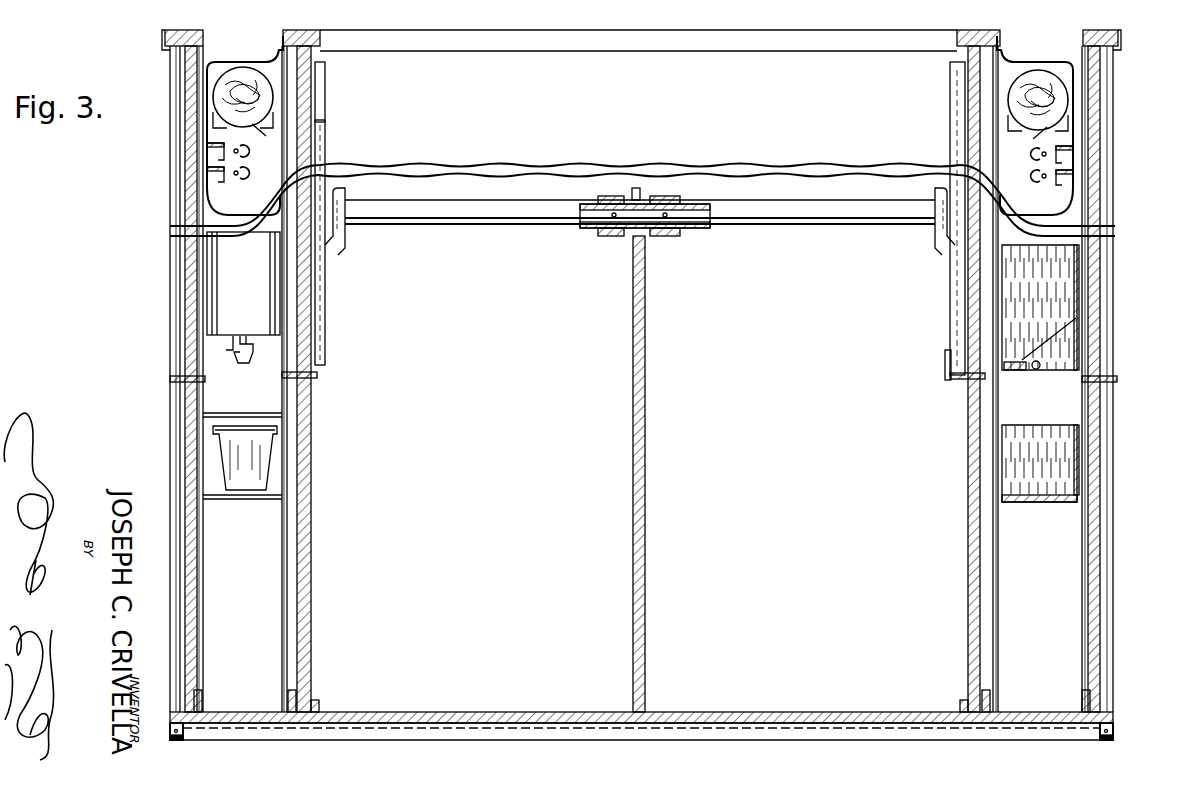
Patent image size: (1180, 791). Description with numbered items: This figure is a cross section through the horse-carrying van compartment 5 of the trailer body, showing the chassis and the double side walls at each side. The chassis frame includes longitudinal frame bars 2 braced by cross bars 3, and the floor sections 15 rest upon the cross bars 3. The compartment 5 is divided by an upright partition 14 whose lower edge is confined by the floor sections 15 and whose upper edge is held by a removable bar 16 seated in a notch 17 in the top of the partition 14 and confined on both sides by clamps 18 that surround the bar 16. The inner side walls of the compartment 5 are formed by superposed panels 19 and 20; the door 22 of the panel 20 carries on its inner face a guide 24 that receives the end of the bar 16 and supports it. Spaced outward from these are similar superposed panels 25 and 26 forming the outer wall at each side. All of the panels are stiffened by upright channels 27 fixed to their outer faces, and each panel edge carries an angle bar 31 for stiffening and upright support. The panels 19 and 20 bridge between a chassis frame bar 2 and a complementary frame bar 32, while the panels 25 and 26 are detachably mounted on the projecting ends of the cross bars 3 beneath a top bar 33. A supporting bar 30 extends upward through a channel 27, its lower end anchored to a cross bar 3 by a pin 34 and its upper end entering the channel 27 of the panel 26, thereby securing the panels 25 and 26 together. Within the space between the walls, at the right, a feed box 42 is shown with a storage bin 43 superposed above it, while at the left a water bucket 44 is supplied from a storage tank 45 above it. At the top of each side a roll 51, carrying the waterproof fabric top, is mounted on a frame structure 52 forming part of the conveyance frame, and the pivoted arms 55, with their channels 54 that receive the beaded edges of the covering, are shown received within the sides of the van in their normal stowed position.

The longitudinal frame bars 2 is at (322, 702).
The cross bars 3 is at (500, 735).
The van compartment 5 is at (812, 712).
The upright partition 14 is at (646, 372).
The floor sections 15 is at (488, 712).
The bars 16 is at (538, 212).
The notch 17 is at (642, 192).
The clamps 18 is at (610, 236).
The panel 19 is at (310, 526).
The panel 20 is at (312, 300).
The door 22 is at (326, 328).
The guide 24 is at (346, 240).
The panel 25 is at (192, 512).
The panel 26 is at (188, 278).
The upright channels 27 is at (178, 592).
The supporting bar 30 is at (183, 740).
The angle bar 31 is at (178, 383).
The complementary frame bar 32 is at (320, 46).
The top bar 33 is at (165, 36).
The pin 34 is at (172, 732).
The feed box 42 is at (215, 466).
The storage bin 43 is at (1050, 290).
The water receptacle or bucket 44 is at (255, 460).
The storage tank 45 is at (220, 300).
The roll 51 is at (225, 98).
The frame structure 52 is at (228, 64).
The channels 54 is at (640, 153).
The arms 55 is at (215, 174).